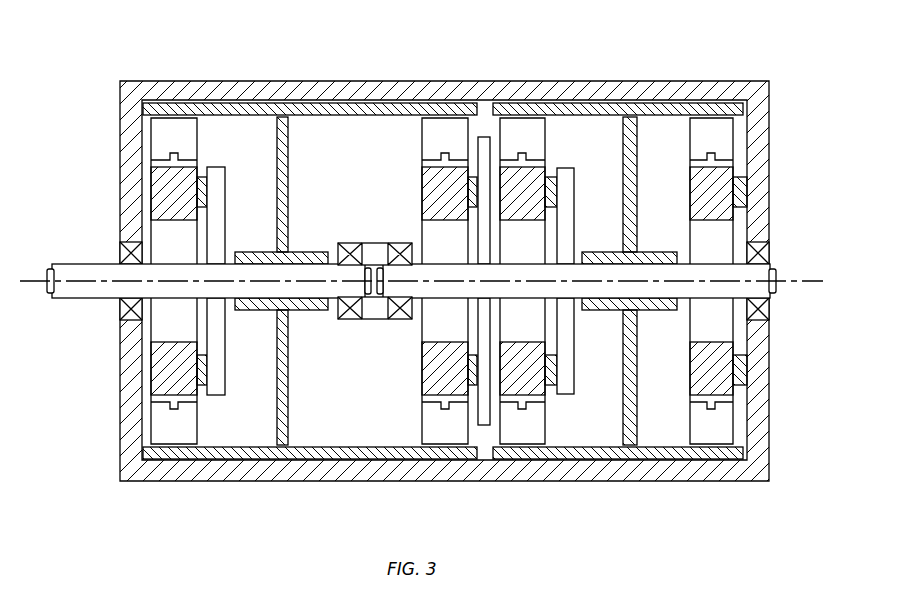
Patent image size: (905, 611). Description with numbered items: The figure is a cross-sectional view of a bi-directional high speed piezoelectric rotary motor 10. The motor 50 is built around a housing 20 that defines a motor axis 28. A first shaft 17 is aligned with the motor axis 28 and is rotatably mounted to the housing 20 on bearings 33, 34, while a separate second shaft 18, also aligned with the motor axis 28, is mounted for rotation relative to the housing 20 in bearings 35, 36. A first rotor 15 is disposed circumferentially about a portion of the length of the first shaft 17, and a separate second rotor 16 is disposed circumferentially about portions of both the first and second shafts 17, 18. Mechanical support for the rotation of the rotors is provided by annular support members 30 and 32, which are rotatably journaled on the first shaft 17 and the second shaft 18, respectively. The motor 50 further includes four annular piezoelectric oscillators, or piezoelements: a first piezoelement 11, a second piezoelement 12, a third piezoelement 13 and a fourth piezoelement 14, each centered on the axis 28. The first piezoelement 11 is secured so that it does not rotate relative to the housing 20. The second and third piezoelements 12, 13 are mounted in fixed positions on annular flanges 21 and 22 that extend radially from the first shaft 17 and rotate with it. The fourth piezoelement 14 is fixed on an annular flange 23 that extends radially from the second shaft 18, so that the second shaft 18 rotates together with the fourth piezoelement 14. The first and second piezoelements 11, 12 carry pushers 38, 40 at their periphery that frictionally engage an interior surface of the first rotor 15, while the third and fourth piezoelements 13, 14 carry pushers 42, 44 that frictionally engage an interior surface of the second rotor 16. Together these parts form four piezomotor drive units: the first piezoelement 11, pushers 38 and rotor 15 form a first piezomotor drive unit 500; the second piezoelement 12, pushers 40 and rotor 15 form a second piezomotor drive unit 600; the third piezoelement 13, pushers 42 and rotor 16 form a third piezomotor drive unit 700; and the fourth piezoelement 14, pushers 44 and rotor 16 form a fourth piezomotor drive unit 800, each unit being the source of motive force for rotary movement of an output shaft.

The bi-directional high speed piezoelectric rotary motor 10 is at (768, 492).
The first piezoelement 11 is at (707, 204).
The second piezoelement 12 is at (540, 218).
The third piezoelement 13 is at (434, 189).
The fourth piezoelement 14 is at (170, 368).
The first rotor 15 is at (676, 104).
The second rotor 16 is at (333, 104).
The first shaft 17 is at (762, 290).
The second shaft 18 is at (72, 280).
The housing 20 is at (583, 82).
The annular flange 21 is at (569, 357).
The annular flange 22 is at (490, 425).
The annular flange 23 is at (225, 215).
The motor axis 28 is at (783, 283).
The annular support member 30 is at (631, 178).
The annular support member 32 is at (284, 184).
The bearing 33 is at (400, 319).
The bearing 34 is at (762, 310).
The bearing 35 is at (350, 243).
The bearing 36 is at (120, 311).
The pushers 38 is at (710, 133).
The pushers 40 is at (537, 133).
The pushers 42 is at (432, 133).
The pushers 44 is at (183, 134).
The motor 50 is at (787, 443).
The first piezomotor drive unit 500 is at (740, 58).
The second piezomotor drive unit 600 is at (552, 58).
The third piezomotor drive unit 700 is at (475, 58).
The fourth piezomotor drive unit 800 is at (198, 58).